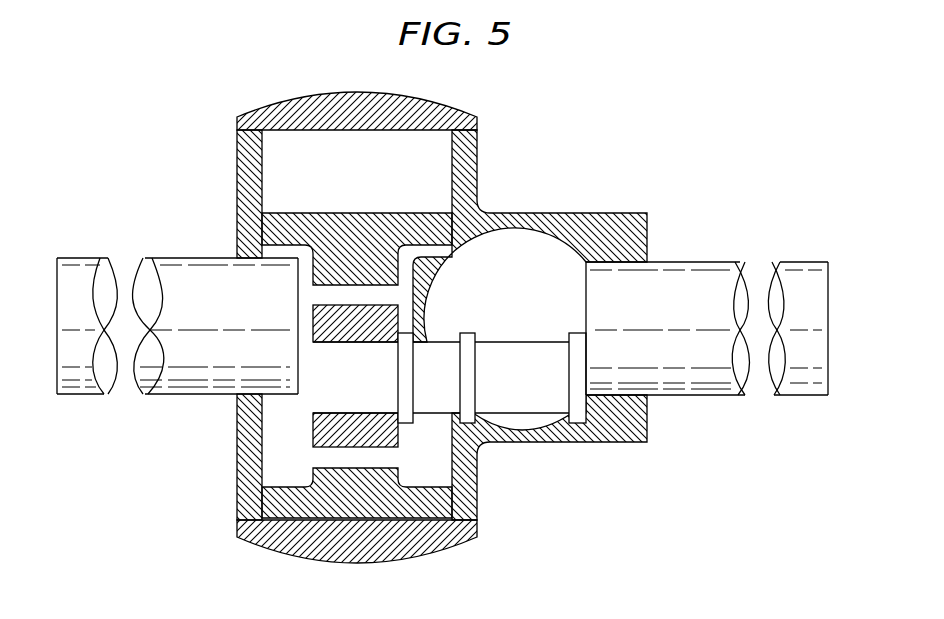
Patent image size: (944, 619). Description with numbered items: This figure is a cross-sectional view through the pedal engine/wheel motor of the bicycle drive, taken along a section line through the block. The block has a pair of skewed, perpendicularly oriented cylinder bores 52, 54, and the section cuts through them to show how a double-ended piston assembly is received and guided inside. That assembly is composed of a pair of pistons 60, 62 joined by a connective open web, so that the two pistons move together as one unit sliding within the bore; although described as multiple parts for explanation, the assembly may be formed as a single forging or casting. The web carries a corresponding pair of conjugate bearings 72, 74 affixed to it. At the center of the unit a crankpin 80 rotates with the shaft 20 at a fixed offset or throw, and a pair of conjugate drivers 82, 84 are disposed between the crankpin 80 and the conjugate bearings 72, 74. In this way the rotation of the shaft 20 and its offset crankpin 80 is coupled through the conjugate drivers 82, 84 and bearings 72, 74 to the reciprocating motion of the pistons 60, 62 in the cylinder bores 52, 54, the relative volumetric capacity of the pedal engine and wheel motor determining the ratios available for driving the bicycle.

The shaft 20 is at (683, 275).
The cylinder bore 52 is at (520, 250).
The cylinder bore 54 is at (298, 178).
The piston 60 is at (282, 232).
The piston 62 is at (272, 497).
The conjugate bearing 72 is at (333, 297).
The conjugate bearing 74 is at (325, 460).
The crankpin 80 is at (337, 391).
The conjugate driver 82 is at (333, 321).
The conjugate driver 84 is at (400, 437).